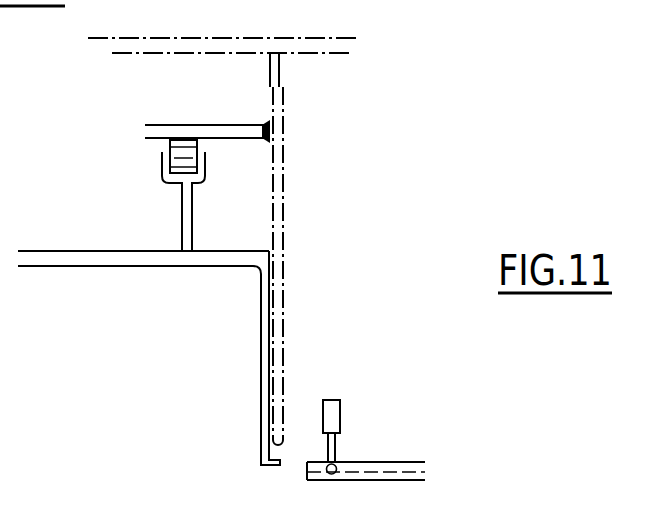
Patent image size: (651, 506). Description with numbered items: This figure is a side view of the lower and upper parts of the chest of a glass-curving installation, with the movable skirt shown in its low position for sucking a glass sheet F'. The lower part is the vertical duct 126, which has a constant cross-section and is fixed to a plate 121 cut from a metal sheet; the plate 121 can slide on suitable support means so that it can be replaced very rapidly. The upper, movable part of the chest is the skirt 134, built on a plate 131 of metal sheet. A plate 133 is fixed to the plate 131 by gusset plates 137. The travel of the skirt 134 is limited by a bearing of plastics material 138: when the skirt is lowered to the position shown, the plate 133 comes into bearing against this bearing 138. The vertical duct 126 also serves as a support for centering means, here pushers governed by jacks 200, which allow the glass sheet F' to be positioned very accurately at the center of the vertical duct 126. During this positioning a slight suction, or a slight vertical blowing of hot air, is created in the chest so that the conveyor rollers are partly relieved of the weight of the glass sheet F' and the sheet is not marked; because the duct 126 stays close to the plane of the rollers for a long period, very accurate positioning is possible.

The plate 121 is at (142, 255).
The vertical duct 126 is at (262, 335).
The plate 131 is at (243, 43).
The plate 133 is at (193, 125).
The skirt 134 is at (280, 188).
The gusset plates 137 is at (247, 83).
The bearing of plastics material 138 is at (167, 162).
The jacks 200 is at (340, 412).
The glass sheet F' is at (366, 439).